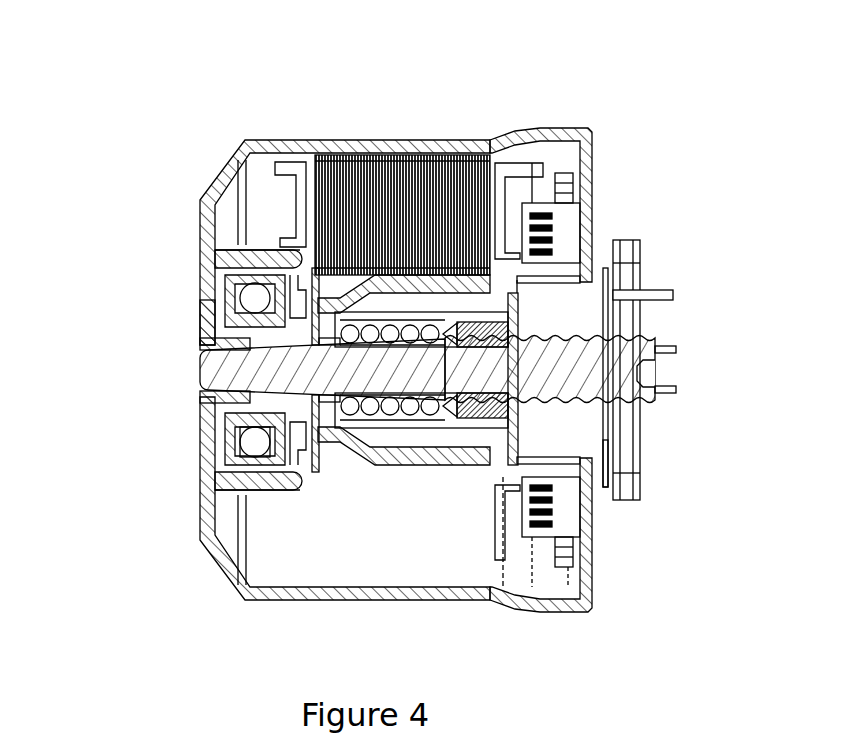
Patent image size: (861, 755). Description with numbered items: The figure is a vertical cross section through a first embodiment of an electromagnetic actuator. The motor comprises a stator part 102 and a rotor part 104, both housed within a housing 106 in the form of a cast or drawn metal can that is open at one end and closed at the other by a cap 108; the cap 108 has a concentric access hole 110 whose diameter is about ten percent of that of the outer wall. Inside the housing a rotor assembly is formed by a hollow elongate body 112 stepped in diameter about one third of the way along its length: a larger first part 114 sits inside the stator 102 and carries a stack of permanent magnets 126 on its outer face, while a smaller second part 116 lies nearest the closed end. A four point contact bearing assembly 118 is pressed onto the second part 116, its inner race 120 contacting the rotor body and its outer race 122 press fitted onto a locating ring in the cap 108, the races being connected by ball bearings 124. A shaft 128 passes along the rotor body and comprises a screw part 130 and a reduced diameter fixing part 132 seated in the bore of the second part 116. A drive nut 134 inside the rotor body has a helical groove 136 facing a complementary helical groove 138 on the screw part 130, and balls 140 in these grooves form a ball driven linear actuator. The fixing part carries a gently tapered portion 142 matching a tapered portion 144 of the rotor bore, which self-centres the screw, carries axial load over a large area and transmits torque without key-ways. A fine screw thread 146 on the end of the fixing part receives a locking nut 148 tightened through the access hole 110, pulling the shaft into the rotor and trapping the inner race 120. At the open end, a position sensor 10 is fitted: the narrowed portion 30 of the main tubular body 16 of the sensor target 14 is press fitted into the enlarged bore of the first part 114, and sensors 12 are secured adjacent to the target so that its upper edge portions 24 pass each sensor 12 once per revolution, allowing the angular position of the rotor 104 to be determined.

The position sensor 10 is at (692, 495).
The sensors 12 is at (627, 500).
The sensor target 14 is at (585, 437).
The main tubular body 16 is at (631, 503).
The upper edge portions 24 is at (607, 482).
The narrowed portion 30 is at (490, 442).
The stator part 102 is at (389, 150).
The rotor part 104 is at (290, 327).
The housing 106 is at (482, 138).
The cap 108 is at (197, 218).
The access hole 110 is at (197, 325).
The hollow elongate rotor body 112 is at (480, 232).
The first part of the rotor body 114 is at (434, 150).
The second part of the rotor body 116 is at (258, 484).
The four point contact bearing assembly 118 is at (262, 468).
The inner race 120 is at (207, 352).
The outer race 122 is at (237, 272).
The ball bearings 124 is at (230, 298).
The permanent magnets 126 is at (497, 278).
The shaft 128 is at (662, 328).
The screw part 130 is at (585, 378).
The fixing part 132 is at (332, 360).
The drive nut 134 is at (462, 313).
The helical groove 136 is at (430, 420).
The helical groove 138 is at (447, 410).
The balls 140 is at (397, 417).
The tapered portion 142 is at (303, 400).
The tapered portion of the bore 144 is at (318, 138).
The screw thread 146 is at (250, 408).
The locking nut 148 is at (197, 341).